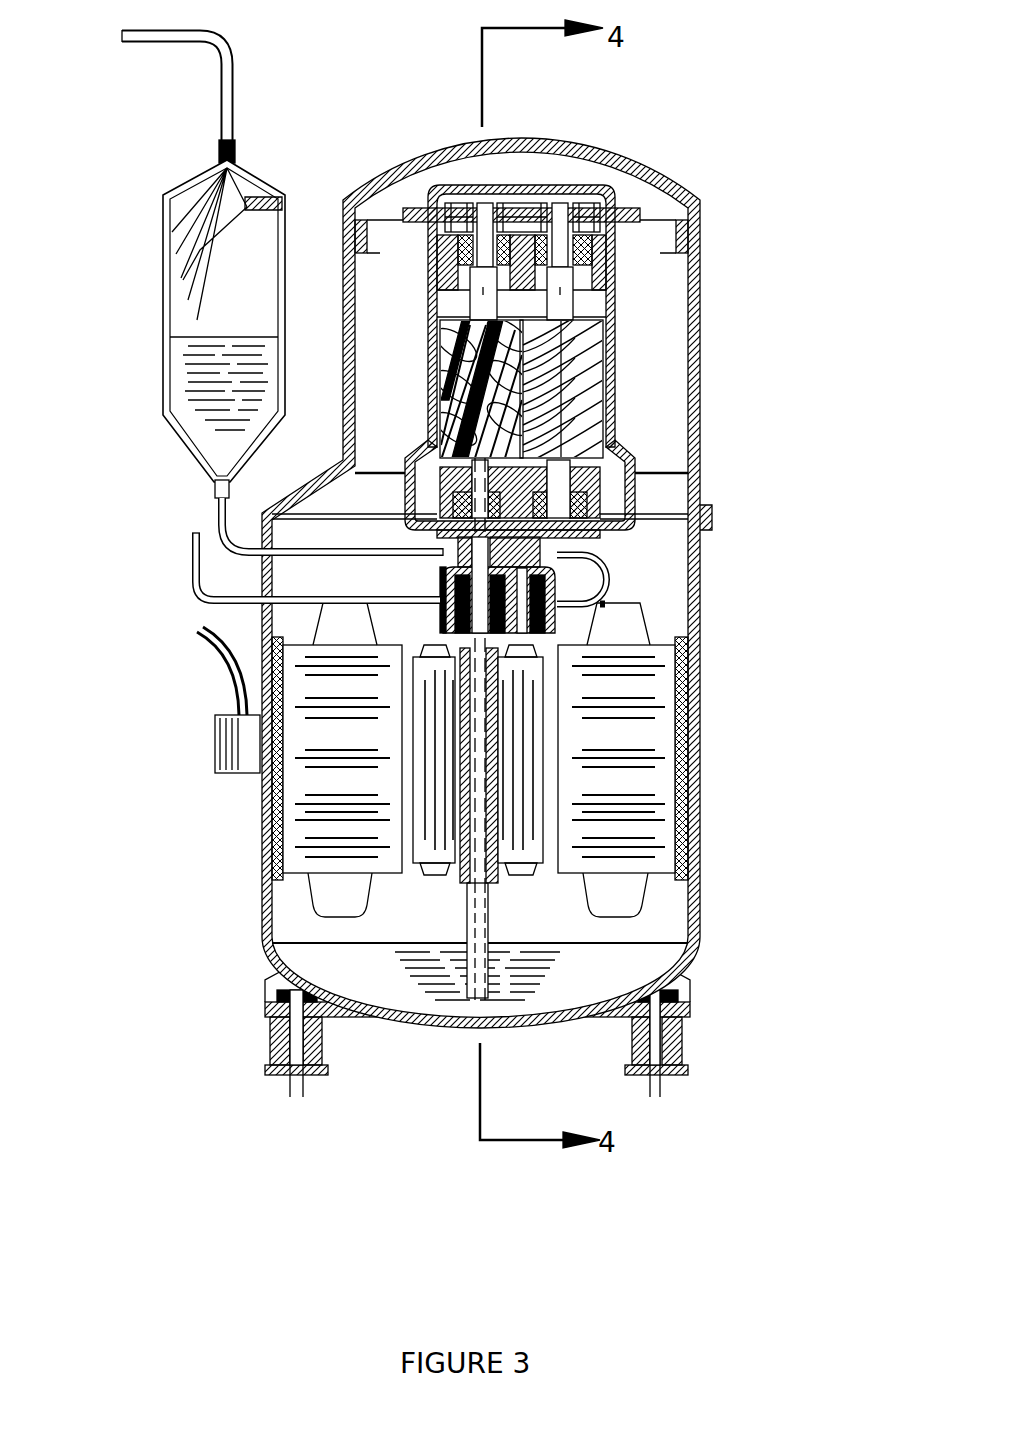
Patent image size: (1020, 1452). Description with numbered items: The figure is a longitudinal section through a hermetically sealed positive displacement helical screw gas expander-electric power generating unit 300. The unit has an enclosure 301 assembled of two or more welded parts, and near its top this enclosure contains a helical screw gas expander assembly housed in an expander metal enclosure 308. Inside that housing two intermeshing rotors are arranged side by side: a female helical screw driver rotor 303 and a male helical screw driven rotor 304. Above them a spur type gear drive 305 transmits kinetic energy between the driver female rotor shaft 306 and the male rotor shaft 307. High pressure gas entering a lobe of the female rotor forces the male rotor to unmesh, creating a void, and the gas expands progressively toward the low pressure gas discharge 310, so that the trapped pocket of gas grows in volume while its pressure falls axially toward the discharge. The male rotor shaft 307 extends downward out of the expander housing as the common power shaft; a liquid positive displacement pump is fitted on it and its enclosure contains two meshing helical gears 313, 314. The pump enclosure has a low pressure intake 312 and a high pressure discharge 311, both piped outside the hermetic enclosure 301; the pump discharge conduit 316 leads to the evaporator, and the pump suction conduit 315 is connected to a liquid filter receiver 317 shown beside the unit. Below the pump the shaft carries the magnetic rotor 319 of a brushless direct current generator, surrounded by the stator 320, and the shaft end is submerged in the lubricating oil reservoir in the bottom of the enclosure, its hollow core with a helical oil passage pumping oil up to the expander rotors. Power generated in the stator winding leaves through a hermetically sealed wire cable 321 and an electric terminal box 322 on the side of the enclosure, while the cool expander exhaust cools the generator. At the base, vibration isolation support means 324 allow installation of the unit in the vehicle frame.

The helical screw gas expander-electric power generating unit 300 is at (370, 703).
The enclosure 301 is at (262, 882).
The female helical screw driver rotor 303 is at (615, 392).
The male helical screw driven rotor 304 is at (455, 400).
The spur type gear drive 305 is at (538, 212).
The driver female rotor shaft 306 is at (605, 195).
The male rotor shaft 307 is at (484, 222).
The expander metal enclosure 308 is at (430, 410).
The low pressure gas discharge 310 is at (637, 490).
The high pressure discharge 311 is at (437, 592).
The low pressure intake 312 is at (560, 610).
The meshing helical gear 313 is at (600, 602).
The meshing helical gear 314 is at (443, 620).
The suction pipe 315 is at (393, 550).
The pump discharge conduit 316 is at (185, 560).
The liquid filter receiver 317 is at (249, 165).
The magnetic rotor 319 is at (436, 878).
The stator 320 is at (310, 907).
The hermetically sealed wire cable 321 is at (232, 690).
The electric terminal box 322 is at (213, 748).
The vibration isolation support means 324 is at (296, 1084).